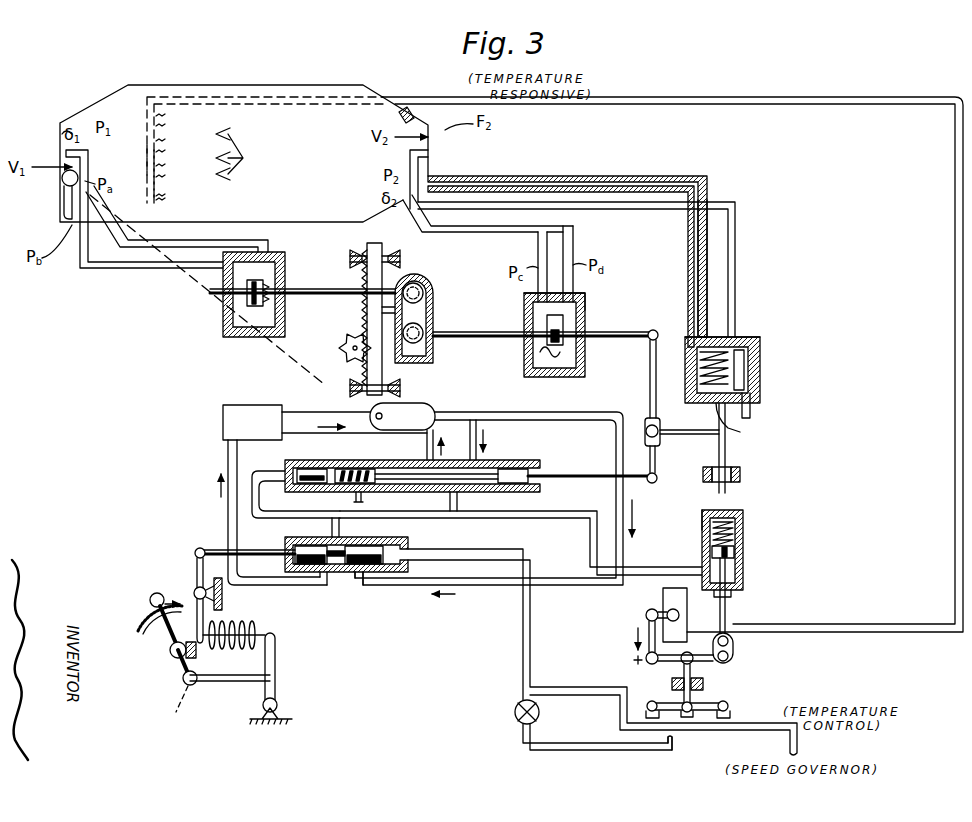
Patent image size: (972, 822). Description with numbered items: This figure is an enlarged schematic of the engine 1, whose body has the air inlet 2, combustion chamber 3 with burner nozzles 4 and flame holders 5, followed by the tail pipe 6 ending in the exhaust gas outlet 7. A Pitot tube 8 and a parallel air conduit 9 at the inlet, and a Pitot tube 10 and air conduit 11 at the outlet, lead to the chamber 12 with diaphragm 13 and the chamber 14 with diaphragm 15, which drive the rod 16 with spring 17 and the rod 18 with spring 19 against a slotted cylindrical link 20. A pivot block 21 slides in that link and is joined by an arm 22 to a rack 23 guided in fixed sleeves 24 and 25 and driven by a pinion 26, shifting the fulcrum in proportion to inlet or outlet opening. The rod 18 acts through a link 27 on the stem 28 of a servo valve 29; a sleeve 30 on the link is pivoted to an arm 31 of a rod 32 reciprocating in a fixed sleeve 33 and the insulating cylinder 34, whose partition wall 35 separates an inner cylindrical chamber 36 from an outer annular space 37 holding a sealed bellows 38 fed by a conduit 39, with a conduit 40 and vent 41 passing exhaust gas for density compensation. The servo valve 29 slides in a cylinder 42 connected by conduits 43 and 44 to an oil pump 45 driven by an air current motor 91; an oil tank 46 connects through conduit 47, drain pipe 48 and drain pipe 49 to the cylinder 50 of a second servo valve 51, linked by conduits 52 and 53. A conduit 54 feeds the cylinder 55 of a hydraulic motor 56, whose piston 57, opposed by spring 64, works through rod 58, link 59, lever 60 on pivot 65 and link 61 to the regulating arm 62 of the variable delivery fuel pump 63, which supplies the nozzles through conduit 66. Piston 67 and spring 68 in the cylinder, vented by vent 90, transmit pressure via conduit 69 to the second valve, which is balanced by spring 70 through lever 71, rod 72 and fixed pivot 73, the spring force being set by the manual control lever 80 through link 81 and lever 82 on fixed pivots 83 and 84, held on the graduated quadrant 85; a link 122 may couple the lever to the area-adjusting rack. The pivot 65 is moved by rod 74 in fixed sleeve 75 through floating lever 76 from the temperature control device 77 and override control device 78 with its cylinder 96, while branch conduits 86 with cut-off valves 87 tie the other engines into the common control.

The body of ram-jet engine 1 is at (244, 153).
The air inlet 2 is at (60, 141).
The combustion chamber 3 is at (171, 174).
The burner nozzles 4 is at (147, 172).
The flame holders 5 is at (235, 154).
The tail pipe 6 is at (412, 117).
The exhaust gas outlet 7 is at (428, 155).
The Pitot tube 8 is at (88, 157).
The air conduit 9 is at (66, 210).
The Pitot tube 10 is at (430, 180).
The air conduit 11 is at (408, 218).
The chamber 12 is at (235, 294).
The diaphragm 13 is at (289, 264).
The chamber 14 is at (585, 320).
The diaphragm 15 is at (585, 300).
The rod 16 is at (212, 290).
The spring 17 is at (268, 310).
The rod 18 is at (465, 332).
The spring 19 is at (575, 350).
The slotted cylindrical link 20 is at (412, 278).
The pivot block 21 is at (433, 300).
The arm 22 is at (380, 312).
The rack 23 is at (394, 262).
The fixed sleeve 24 is at (356, 250).
The fixed sleeve 25 is at (352, 384).
The pinion 26 is at (340, 348).
The link 27 is at (650, 385).
The stem 28 is at (568, 474).
The servo valve 29 is at (510, 469).
The sleeve 30 is at (661, 445).
The arm 31 is at (680, 431).
The rod 32 is at (727, 455).
The fixed sleeve 33 is at (742, 480).
The cylinder 34 is at (762, 370).
The partition wall 35 is at (760, 356).
The inner cylindrical chamber 36 is at (725, 405).
The outer annular space 37 is at (748, 392).
The sealed bellows 38 is at (740, 337).
The conduit 39 is at (734, 290).
The conduit 40 is at (698, 292).
The vent 41 is at (752, 420).
The cylinder 42 is at (520, 490).
The conduit 43 is at (484, 440).
The conduit 44 is at (525, 413).
The oil pump 45 is at (420, 403).
The oil tank 46 is at (226, 410).
The conduit 47 is at (320, 412).
The drain pipe 48 is at (443, 440).
The drain pipe 49 is at (228, 455).
The cylinder 50 is at (340, 572).
The second servo valve 51 is at (368, 572).
The conduit 52 is at (335, 530).
The conduit 53 is at (260, 494).
The conduit 54 is at (590, 532).
The cylinder 55 is at (706, 522).
The hydraulic motor 56 is at (760, 578).
The piston 57 is at (745, 553).
The rod 58 is at (728, 612).
The link 59 is at (735, 655).
The lever 60 is at (650, 662).
The link 61 is at (640, 626).
The regulating arm 62 is at (646, 615).
The variable delivery fuel pump 63 is at (665, 594).
The spring 64 is at (742, 524).
The pivot 65 is at (695, 662).
The conduit 66 is at (338, 100).
The piston 67 is at (312, 470).
The spring 68 is at (362, 469).
The conduit 69 is at (447, 557).
The spring 70 is at (212, 620).
The lever 71 is at (196, 562).
The rod 72 is at (268, 542).
The fixed pivot 73 is at (195, 595).
The rod 74 is at (728, 705).
The fixed sleeve 75 is at (672, 685).
The floating lever 76 is at (700, 712).
The temperature control device 77 is at (735, 718).
The maximum temperature override control device 78 is at (655, 718).
The manual control lever 80 is at (178, 655).
The link 81 is at (222, 683).
The lever 82 is at (276, 660).
The fixed pivot 83 is at (192, 654).
The fixed pivot 84 is at (262, 708).
The quadrant 85 is at (160, 620).
The branch conduit 86 is at (666, 748).
The cut-off valve 87 is at (515, 712).
The vent 90 is at (363, 500).
The air current motor 91 is at (62, 180).
The cylinder 96 is at (405, 98).
The link 122 is at (176, 712).